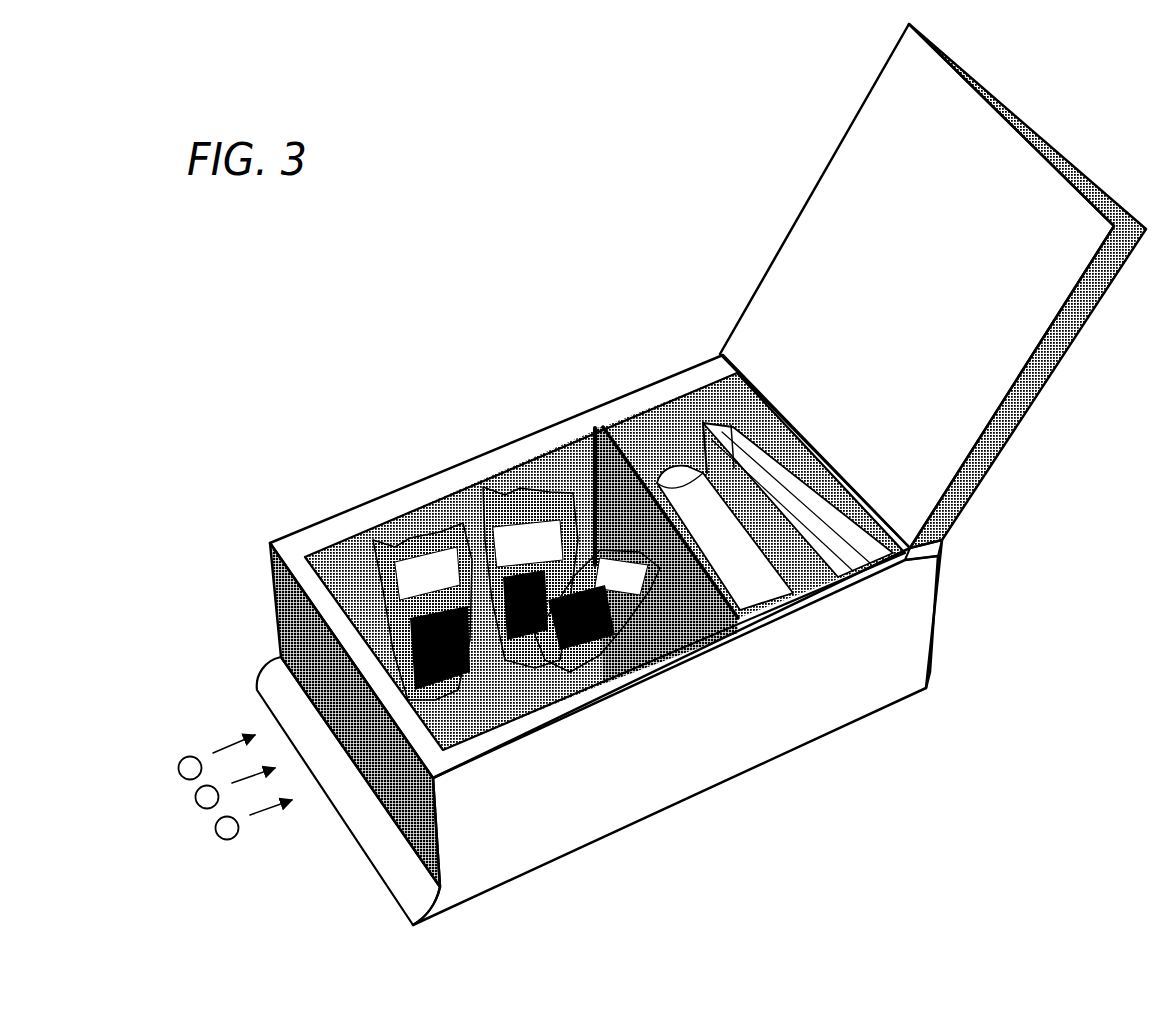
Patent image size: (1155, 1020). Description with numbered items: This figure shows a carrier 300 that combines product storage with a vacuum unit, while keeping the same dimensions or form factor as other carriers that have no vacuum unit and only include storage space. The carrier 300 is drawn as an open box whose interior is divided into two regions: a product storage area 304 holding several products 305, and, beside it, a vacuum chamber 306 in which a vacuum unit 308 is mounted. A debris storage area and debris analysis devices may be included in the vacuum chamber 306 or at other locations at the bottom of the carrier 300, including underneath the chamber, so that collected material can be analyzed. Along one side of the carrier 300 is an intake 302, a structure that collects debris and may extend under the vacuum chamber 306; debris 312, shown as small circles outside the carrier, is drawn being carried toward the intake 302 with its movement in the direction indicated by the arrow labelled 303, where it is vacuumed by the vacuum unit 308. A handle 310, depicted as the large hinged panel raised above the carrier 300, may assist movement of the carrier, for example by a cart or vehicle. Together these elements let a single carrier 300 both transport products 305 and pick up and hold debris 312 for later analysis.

The carrier 300 is at (640, 768).
The intake 302 is at (280, 657).
The arrow 303 is at (222, 742).
The product storage area 304 is at (543, 468).
The products 305 is at (417, 562).
The vacuum chamber 306 is at (653, 437).
The vacuum unit 308 is at (757, 580).
The handle 310 is at (827, 150).
The debris 312 is at (191, 836).